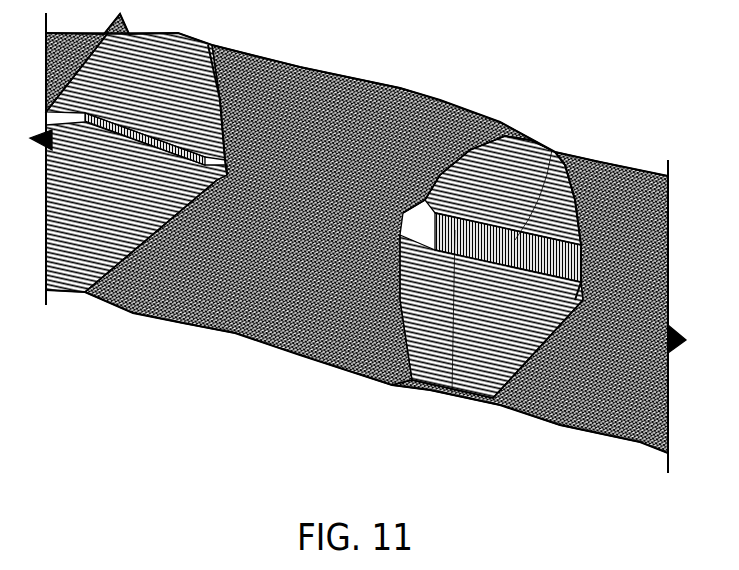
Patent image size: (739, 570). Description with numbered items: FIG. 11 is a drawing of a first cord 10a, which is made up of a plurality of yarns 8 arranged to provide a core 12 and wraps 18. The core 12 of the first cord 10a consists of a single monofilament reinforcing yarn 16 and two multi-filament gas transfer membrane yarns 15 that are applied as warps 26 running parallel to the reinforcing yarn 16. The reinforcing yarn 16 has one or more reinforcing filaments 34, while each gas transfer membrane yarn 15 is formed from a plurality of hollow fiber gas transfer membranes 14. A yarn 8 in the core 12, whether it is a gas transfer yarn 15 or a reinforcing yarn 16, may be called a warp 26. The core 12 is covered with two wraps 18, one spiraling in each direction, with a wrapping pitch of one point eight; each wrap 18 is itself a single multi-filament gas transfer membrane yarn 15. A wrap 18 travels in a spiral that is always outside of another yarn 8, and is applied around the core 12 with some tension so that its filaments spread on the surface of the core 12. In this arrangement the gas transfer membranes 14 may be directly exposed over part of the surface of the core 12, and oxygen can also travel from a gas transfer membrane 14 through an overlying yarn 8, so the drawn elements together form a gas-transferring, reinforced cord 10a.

The first cord 10a is at (358, 253).
The yarn 8 is at (325, 253).
The gas transfer membrane yarn 15 is at (325, 250).
The warp 26 is at (554, 150).
The wrap 18 is at (389, 374).
The reinforcing yarn 16 is at (485, 354).
The core 12 is at (485, 354).
The reinforcing filament 34 is at (443, 388).
The hollow fiber gas transfer membrane 14 is at (480, 403).